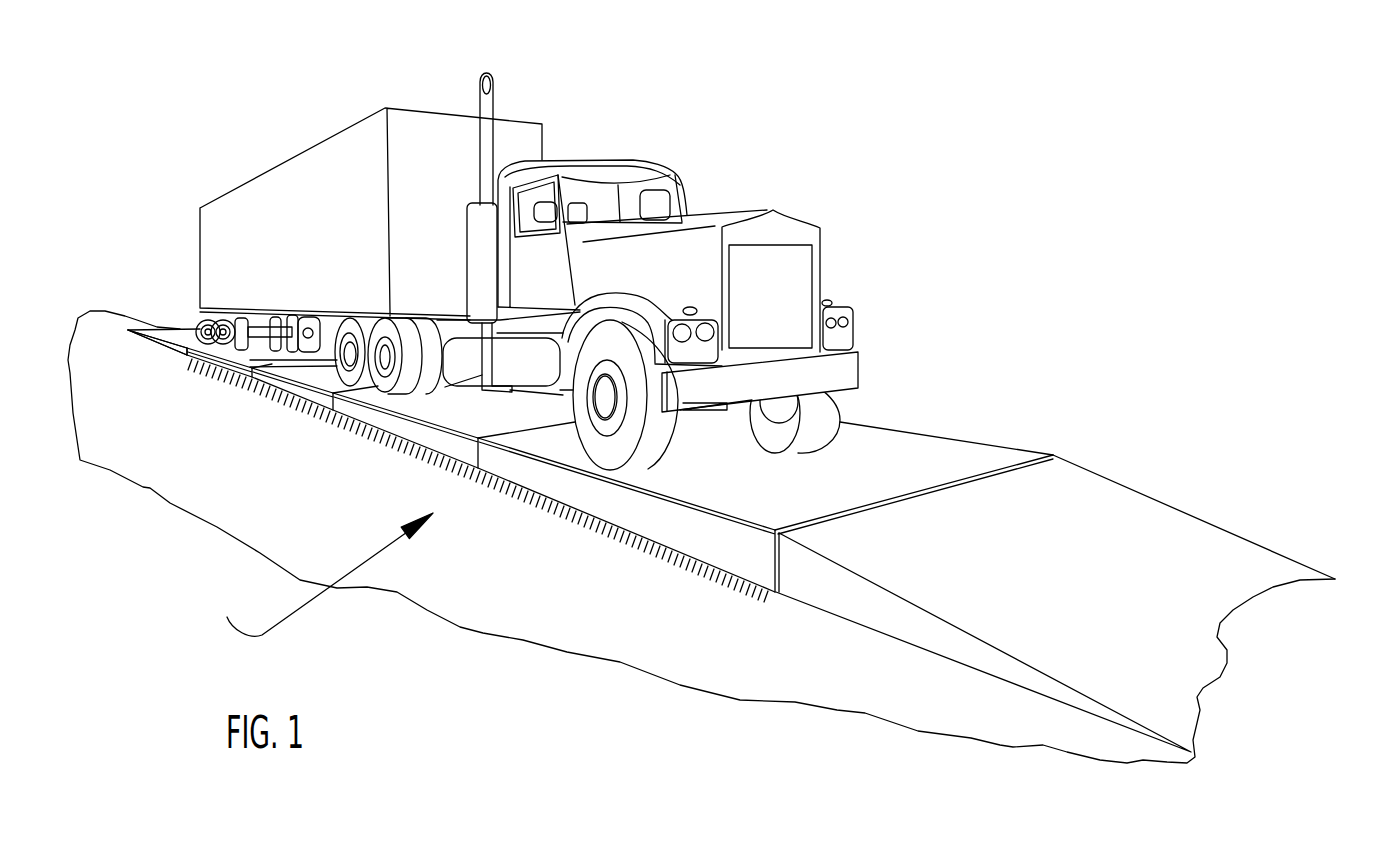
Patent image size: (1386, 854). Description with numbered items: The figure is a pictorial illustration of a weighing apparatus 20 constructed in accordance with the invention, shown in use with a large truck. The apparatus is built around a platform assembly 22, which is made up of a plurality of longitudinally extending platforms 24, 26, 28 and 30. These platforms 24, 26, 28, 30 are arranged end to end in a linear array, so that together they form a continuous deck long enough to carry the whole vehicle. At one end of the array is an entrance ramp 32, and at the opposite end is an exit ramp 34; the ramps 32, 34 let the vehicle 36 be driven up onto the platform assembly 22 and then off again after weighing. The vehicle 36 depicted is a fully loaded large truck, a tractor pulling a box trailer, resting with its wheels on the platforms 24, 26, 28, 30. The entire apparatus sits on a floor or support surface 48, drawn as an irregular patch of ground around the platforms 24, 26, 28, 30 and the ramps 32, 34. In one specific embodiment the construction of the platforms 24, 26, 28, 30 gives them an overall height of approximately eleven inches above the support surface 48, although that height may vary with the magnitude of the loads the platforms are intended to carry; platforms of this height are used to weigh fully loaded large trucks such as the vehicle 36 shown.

The weighing apparatus 20 is at (725, 475).
The platform assembly 22 is at (312, 574).
The platform 24 is at (223, 366).
The platform 26 is at (280, 384).
The platform 28 is at (393, 428).
The platform 30 is at (615, 505).
The entrance ramp 32 is at (170, 350).
The exit ramp 34 is at (841, 604).
The vehicle 36 is at (522, 135).
The floor or support surface 48 is at (497, 603).